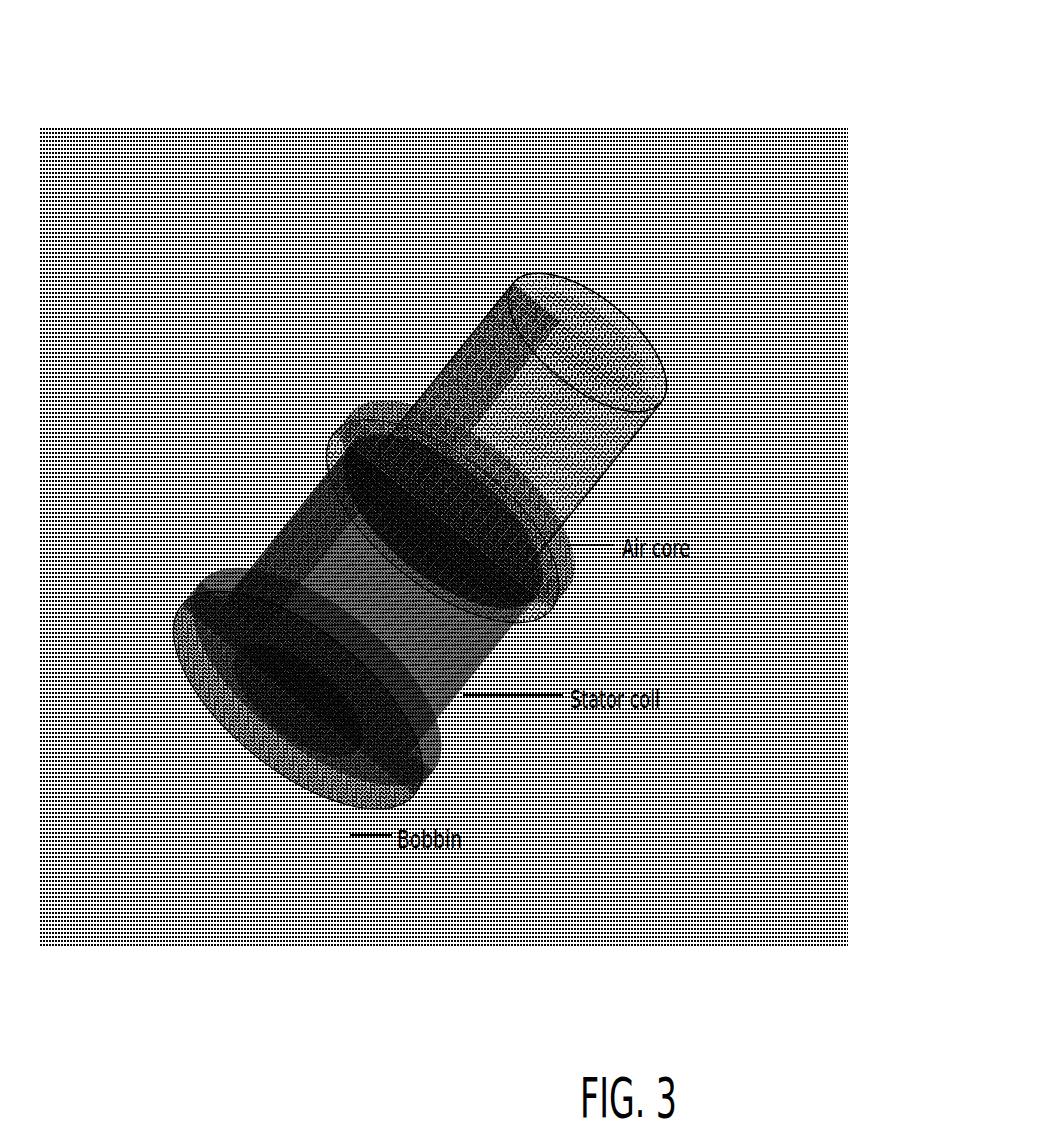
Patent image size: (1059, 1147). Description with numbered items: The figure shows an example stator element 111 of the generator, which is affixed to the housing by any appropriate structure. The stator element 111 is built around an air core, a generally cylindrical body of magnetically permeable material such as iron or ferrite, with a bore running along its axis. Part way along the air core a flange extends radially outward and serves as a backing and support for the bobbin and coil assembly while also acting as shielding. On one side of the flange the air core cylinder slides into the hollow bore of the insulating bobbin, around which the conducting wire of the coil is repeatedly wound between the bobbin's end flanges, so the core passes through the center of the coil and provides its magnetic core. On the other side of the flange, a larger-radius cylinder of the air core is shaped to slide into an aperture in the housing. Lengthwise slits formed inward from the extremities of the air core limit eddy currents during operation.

The stator element 111 is at (434, 431).